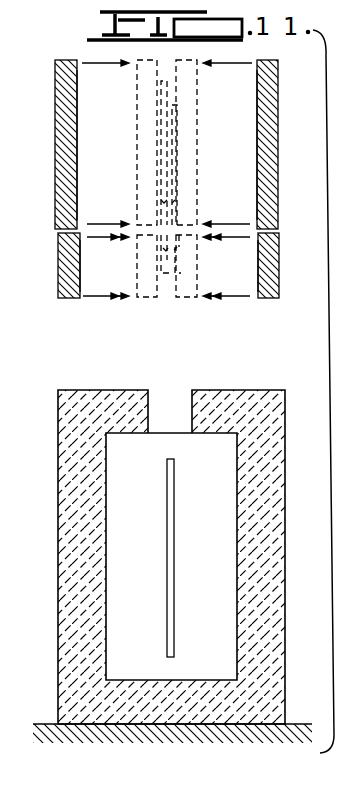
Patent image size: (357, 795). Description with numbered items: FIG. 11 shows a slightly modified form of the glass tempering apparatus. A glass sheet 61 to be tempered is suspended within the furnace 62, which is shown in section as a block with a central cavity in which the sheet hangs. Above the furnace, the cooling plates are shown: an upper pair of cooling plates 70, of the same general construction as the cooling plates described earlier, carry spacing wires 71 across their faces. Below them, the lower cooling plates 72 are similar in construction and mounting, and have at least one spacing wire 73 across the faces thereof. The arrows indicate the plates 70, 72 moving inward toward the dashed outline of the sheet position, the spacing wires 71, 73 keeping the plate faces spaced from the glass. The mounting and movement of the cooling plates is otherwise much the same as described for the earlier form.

The glass sheet 61 is at (175, 487).
The furnace 62 is at (263, 583).
The upper pair of cooling plates 70 is at (63, 152).
The spacing wires 71 is at (78, 108).
The lower cooling plates 72 is at (62, 267).
The spacing wire 73 is at (80, 253).